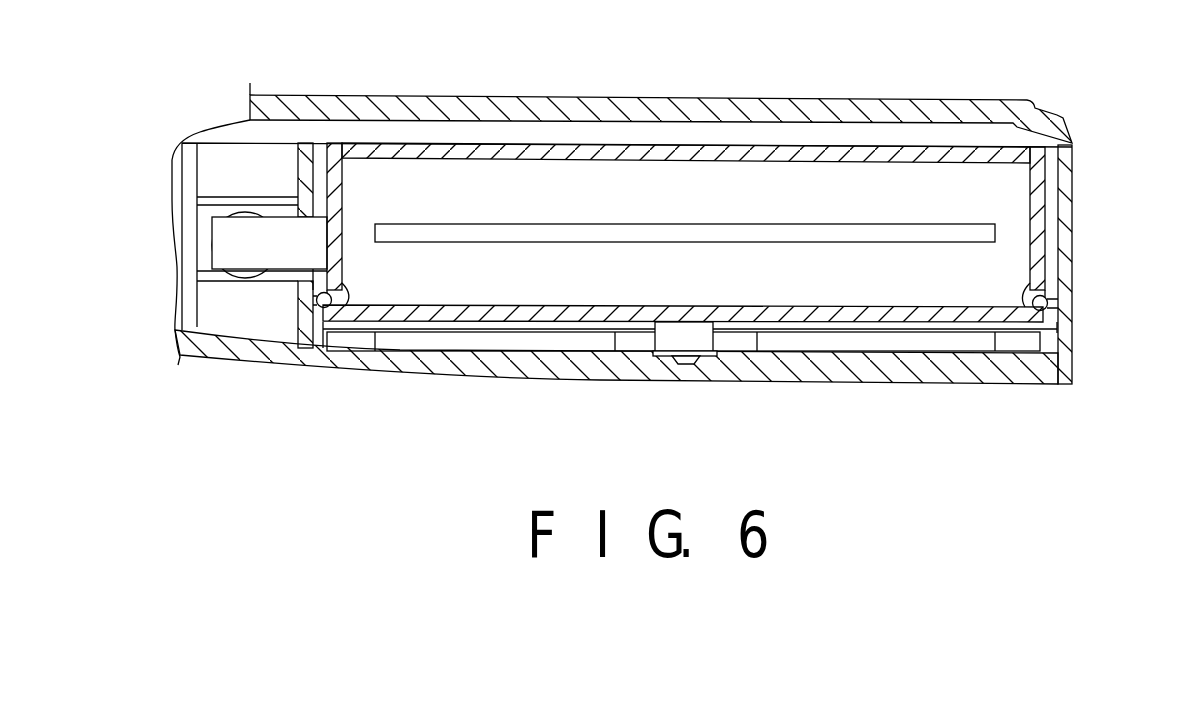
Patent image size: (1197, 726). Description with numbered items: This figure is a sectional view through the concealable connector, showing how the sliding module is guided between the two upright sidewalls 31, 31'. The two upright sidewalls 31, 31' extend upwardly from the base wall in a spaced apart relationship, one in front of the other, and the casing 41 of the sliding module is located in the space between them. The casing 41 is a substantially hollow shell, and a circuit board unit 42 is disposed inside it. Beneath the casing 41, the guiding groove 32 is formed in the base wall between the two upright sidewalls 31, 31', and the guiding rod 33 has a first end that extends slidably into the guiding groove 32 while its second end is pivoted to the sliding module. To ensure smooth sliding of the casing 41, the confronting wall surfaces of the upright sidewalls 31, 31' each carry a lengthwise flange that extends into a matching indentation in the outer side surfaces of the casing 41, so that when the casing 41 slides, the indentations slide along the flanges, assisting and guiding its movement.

The upright sidewall 31 is at (622, 243).
The upright sidewall 31' is at (742, 232).
The guiding groove 32 is at (645, 338).
The guiding rod 33 is at (688, 340).
The casing 41 is at (820, 315).
The circuit board unit 42 is at (868, 238).